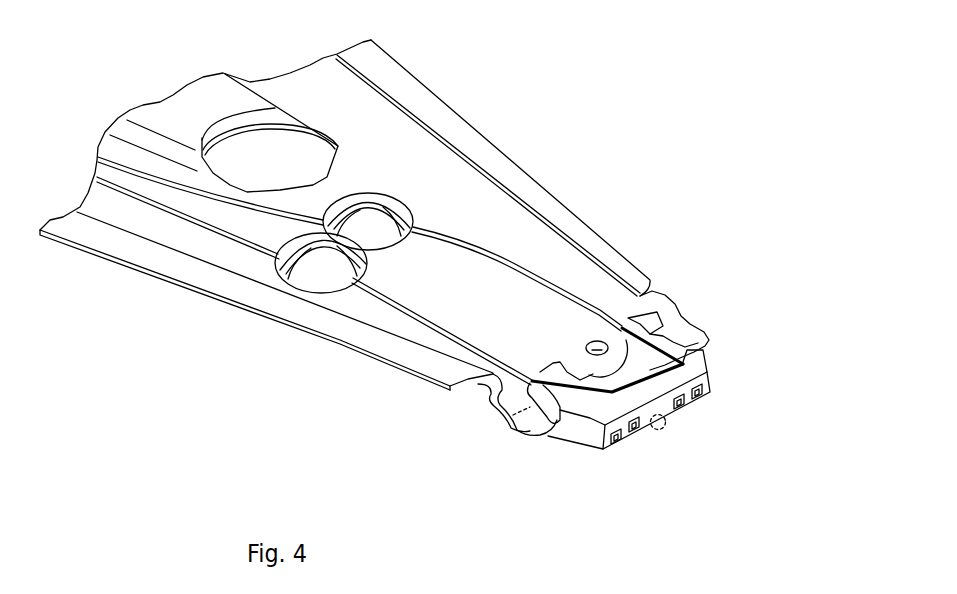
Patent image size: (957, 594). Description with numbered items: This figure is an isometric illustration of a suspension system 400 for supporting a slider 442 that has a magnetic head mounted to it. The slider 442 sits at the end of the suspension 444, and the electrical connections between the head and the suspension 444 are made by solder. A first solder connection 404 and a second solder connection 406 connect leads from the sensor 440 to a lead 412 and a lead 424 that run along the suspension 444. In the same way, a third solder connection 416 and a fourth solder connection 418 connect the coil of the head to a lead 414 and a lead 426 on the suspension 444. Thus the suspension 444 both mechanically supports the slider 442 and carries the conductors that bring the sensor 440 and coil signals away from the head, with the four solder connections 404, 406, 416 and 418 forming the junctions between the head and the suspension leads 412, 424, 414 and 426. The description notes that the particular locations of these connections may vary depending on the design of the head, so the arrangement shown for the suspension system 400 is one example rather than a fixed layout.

The suspension system 400 is at (800, 84).
The first solder connection 404 is at (603, 453).
The second solder connection 406 is at (627, 440).
The lead 412 is at (392, 302).
The lead 414 is at (572, 290).
The third solder connection 416 is at (704, 388).
The fourth solder connection 418 is at (680, 403).
The lead 424 is at (433, 318).
The lead 426 is at (488, 253).
The sensor 440 is at (672, 430).
The slider 442 is at (549, 447).
The suspension 444 is at (518, 151).